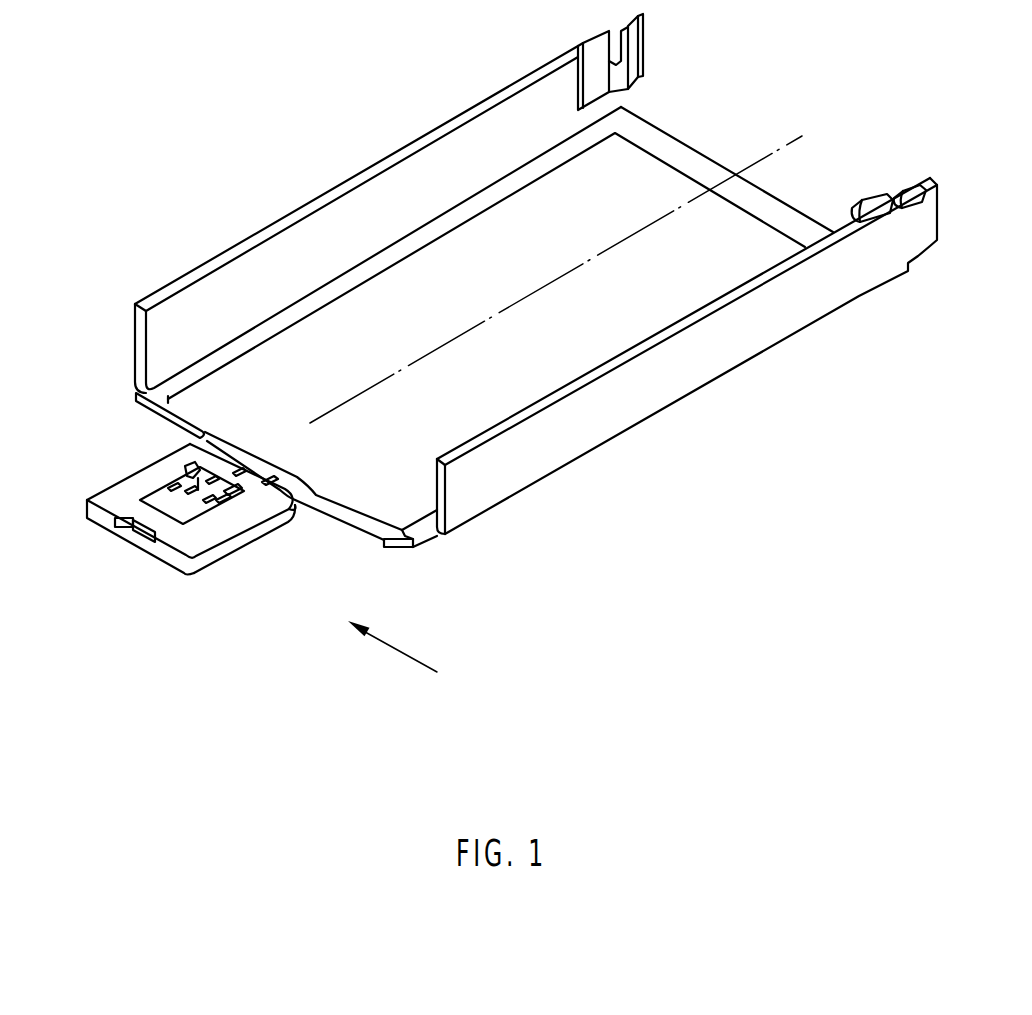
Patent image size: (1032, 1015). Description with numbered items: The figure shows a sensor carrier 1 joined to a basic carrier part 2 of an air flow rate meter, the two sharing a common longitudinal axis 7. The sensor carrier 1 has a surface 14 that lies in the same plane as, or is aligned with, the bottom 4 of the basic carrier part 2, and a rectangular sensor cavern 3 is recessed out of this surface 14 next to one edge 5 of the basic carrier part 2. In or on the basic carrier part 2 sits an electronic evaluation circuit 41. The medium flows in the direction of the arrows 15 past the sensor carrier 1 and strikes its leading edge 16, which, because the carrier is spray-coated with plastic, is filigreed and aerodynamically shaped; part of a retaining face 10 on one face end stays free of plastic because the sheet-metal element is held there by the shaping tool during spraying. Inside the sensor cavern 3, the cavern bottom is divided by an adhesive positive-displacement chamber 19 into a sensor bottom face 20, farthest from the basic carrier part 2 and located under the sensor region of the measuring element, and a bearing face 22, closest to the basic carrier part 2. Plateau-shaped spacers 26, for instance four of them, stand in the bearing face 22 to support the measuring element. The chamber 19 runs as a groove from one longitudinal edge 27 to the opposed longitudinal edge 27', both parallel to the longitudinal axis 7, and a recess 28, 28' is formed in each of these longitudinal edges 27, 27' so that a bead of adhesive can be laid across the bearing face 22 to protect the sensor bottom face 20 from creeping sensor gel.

The sensor carrier 1 is at (156, 565).
The basic carrier part 2 is at (352, 146).
The sensor cavern 3 is at (158, 505).
The bottom 4 is at (672, 147).
The edge 5 is at (333, 516).
The longitudinal axis 7 is at (780, 146).
The retaining face 10 is at (135, 540).
The surface 14 is at (143, 477).
The arrows 15 is at (393, 650).
The leading edge 16 is at (203, 572).
The adhesive positive-displacement chamber 19 is at (225, 510).
The sensor bottom face 20 is at (185, 518).
The bearing face 22 is at (230, 514).
The spacers 26 is at (215, 470).
The longitudinal edge 27 is at (235, 562).
The opposed longitudinal edge 27' is at (138, 429).
The recess 28 is at (322, 454).
The recess 28' is at (229, 416).
The electronic evaluation circuit 41 is at (788, 235).